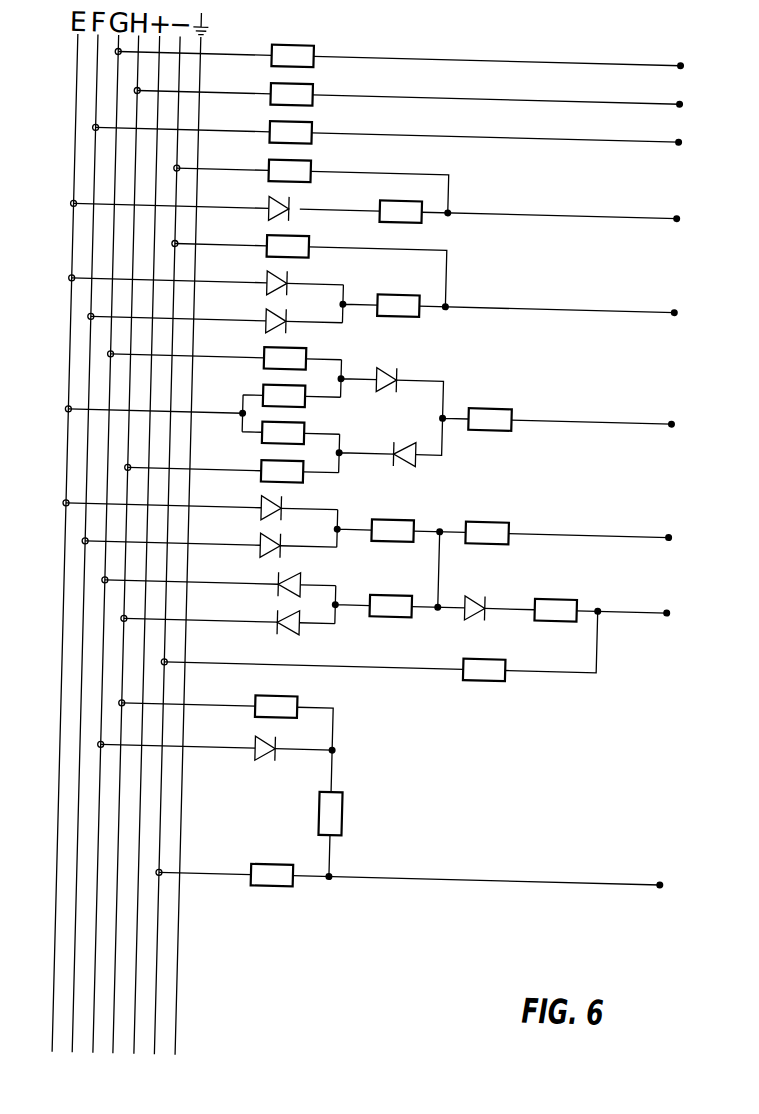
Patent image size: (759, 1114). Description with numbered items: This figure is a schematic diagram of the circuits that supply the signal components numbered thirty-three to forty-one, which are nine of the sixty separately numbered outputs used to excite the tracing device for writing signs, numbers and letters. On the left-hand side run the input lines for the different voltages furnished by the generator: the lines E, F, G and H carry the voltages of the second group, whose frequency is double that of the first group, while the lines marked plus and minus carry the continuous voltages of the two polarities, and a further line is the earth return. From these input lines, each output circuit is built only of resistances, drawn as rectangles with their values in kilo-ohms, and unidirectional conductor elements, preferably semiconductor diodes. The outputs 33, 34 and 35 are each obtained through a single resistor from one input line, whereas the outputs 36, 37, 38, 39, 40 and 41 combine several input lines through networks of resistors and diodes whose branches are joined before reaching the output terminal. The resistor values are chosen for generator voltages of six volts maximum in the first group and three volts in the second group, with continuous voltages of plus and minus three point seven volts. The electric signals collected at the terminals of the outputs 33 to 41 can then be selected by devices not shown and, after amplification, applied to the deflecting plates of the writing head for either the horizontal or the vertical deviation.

The signal component output 33 is at (400, 49).
The signal component output 34 is at (409, 88).
The signal component output 35 is at (387, 125).
The signal component output 36 is at (375, 193).
The signal component output 37 is at (373, 286).
The signal component output 38 is at (370, 417).
The signal component output 39 is at (367, 529).
The signal component output 40 is at (386, 604).
The signal component output 41 is at (381, 793).